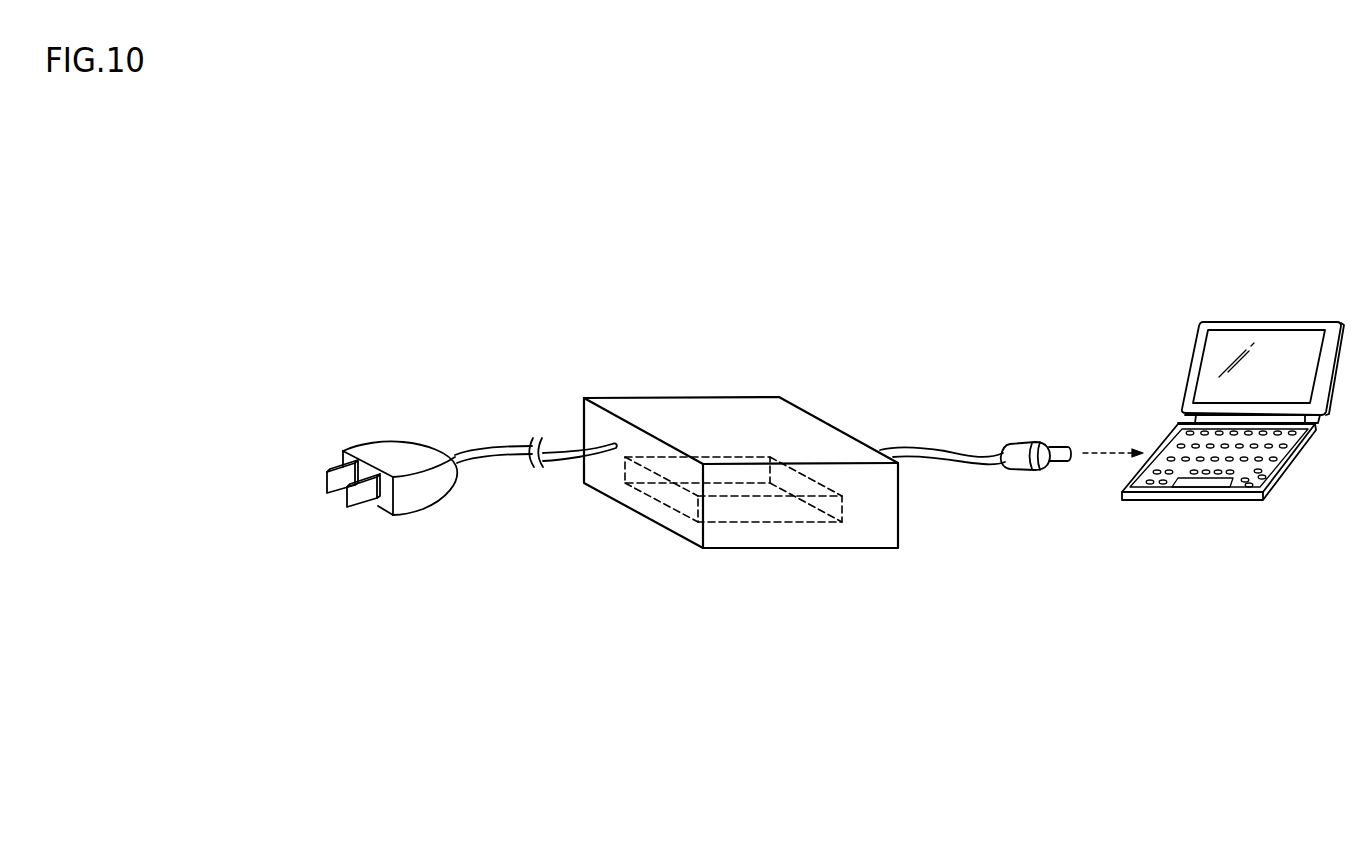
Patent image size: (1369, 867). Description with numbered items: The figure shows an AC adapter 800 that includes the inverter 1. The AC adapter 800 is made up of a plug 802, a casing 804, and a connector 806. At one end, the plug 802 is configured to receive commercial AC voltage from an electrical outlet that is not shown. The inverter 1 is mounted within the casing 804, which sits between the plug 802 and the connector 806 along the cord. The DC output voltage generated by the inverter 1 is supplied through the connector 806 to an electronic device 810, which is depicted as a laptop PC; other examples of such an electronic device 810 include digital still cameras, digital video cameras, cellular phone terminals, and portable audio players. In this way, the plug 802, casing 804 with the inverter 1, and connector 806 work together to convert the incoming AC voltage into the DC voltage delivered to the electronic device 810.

The inverter 1 is at (760, 510).
The AC adapter 800 is at (847, 715).
The plug 802 is at (397, 457).
The casing 804 is at (674, 397).
The connector 806 is at (1023, 442).
The electronic device 810 is at (1278, 320).